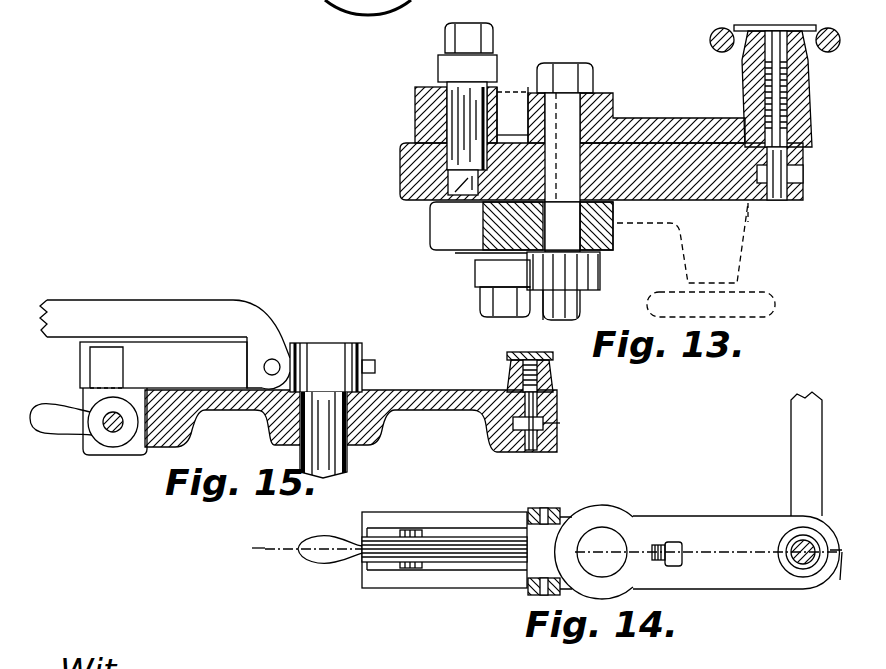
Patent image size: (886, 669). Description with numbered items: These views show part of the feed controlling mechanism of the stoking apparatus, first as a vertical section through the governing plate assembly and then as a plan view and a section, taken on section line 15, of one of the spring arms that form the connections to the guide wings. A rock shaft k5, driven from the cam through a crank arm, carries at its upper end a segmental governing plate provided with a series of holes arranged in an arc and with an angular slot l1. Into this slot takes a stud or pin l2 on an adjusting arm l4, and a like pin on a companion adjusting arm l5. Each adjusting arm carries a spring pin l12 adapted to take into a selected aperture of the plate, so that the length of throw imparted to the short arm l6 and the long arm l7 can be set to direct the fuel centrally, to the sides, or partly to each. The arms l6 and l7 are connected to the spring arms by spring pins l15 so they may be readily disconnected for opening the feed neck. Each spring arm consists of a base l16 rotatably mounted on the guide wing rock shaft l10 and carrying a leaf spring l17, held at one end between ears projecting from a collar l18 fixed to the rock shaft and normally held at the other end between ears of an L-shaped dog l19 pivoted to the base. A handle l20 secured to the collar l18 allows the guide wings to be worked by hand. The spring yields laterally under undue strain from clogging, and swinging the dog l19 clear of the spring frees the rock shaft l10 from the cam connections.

In FIG. 13, the angular slot l1 is at (445, 190).
In FIG. 13, the stud or pin l2 is at (462, 130).
In FIG. 13, the adjusting arm l4 is at (668, 118).
In FIG. 13, the adjusting arm l5 is at (618, 238).
In FIG. 13, the short arm l6 is at (497, 66).
In FIG. 14, the short arm l6 is at (797, 448).
In FIG. 13, the long arm l7 is at (478, 275).
In FIG. 13, the rock shaft k5 is at (521, 227).
In FIG. 13, the spring pin l12 is at (790, 170).
In FIG. 15, the rock shaft l10 is at (333, 474).
In FIG. 14, the rock shaft l10 is at (602, 552).
In FIG. 15, the spring pin l15 is at (548, 423).
In FIG. 15, the base l16 is at (447, 403).
In FIG. 14, the base l16 is at (700, 552).
In FIG. 15, the leaf spring l17 is at (163, 365).
In FIG. 14, the leaf spring l17 is at (450, 548).
In FIG. 15, the collar l18 is at (360, 347).
In FIG. 14, the collar l18 is at (634, 530).
In FIG. 15, the L-shaped dog l19 is at (88, 421).
In FIG. 14, the L-shaped dog l19 is at (312, 546).
In FIG. 15, the handle l20 is at (103, 312).
In FIG. 14, the handle l20 is at (530, 511).
In FIG. 14, the section line 15 is at (540, 572).